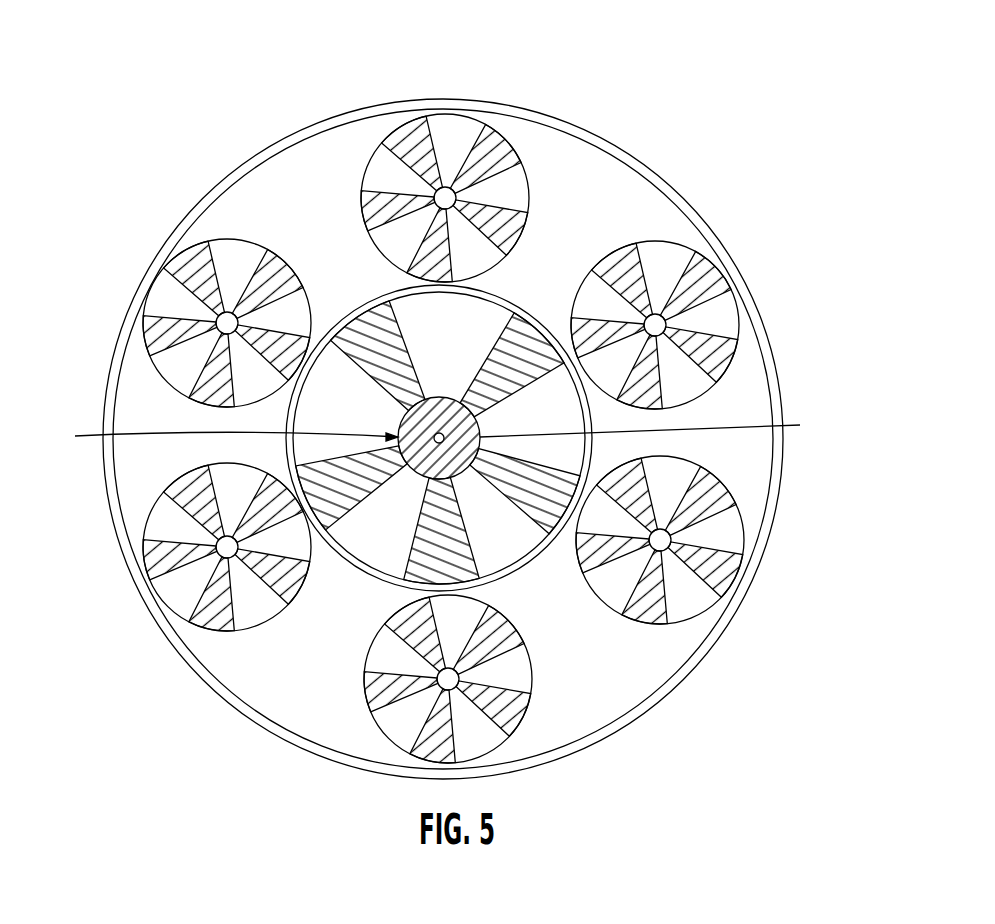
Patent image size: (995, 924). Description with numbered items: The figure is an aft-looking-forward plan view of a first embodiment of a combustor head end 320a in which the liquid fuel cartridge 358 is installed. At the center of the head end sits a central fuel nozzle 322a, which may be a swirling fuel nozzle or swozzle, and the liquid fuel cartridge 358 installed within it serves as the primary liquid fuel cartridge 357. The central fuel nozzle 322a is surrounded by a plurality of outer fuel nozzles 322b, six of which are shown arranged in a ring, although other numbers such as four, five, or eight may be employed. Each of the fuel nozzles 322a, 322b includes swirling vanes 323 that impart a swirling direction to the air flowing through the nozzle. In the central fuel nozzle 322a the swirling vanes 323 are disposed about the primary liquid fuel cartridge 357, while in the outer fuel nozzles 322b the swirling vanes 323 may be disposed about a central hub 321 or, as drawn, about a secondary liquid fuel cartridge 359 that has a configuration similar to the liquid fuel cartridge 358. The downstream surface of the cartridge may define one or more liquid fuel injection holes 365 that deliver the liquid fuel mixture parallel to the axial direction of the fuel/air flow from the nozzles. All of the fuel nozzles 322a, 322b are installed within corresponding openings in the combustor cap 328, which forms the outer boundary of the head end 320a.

The combustor head end 320a is at (143, 150).
The central hub 321 is at (440, 192).
The central fuel nozzle 322a is at (527, 570).
The outer fuel nozzles 322b is at (683, 242).
The swirling vanes 323 is at (480, 150).
The combustor cap 328 is at (132, 380).
The primary liquid fuel cartridge 357 is at (413, 479).
The liquid fuel cartridge 358 is at (217, 437).
The secondary liquid fuel cartridge 359 is at (675, 533).
The liquid fuel injection holes 365 is at (661, 427).